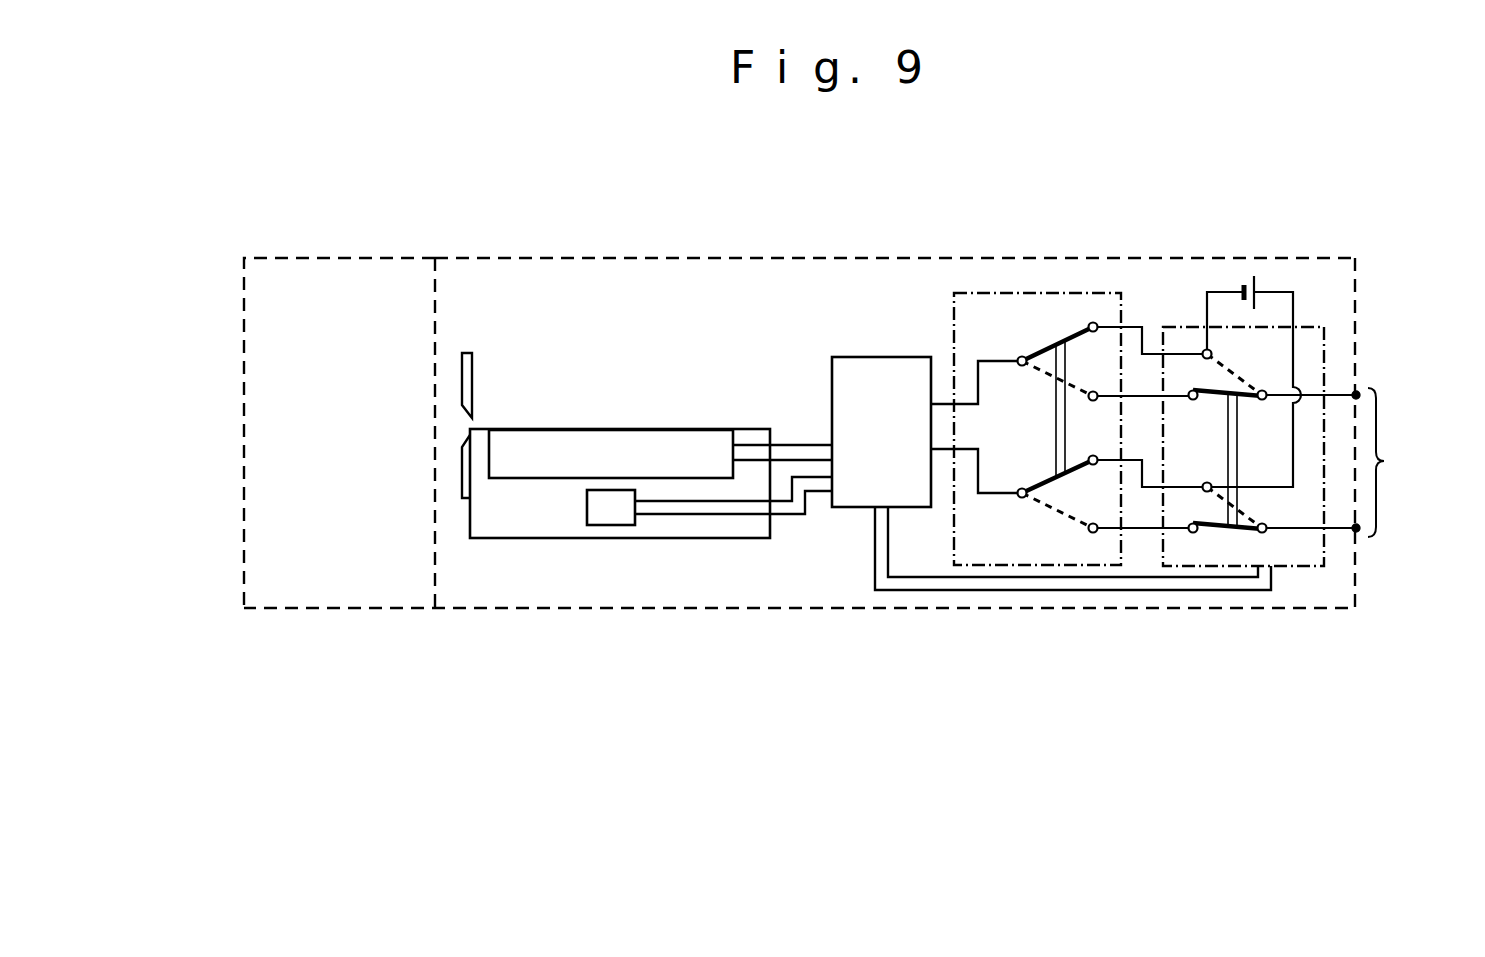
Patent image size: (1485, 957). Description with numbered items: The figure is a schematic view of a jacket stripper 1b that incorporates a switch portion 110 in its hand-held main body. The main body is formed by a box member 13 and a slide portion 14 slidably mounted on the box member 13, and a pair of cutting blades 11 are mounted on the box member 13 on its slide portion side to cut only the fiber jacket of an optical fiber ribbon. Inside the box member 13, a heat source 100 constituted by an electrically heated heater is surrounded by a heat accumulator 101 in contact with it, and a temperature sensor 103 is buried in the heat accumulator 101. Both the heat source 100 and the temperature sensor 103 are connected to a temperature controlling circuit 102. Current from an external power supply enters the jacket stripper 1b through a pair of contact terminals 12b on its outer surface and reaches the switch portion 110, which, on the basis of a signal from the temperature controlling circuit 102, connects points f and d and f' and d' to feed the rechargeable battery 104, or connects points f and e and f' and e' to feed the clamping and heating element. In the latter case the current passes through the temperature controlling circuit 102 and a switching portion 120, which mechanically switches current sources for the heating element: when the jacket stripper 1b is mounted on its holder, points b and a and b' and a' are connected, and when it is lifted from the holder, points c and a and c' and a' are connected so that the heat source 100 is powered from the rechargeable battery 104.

The jacket stripper 1b is at (944, 616).
The cutting blades 11 is at (460, 457).
The box member 13 is at (498, 257).
The slide portion 14 is at (290, 602).
The heat source 100 is at (590, 448).
The heat accumulator 101 is at (508, 527).
The temperature controlling circuit 102 is at (878, 367).
The temperature sensor 103 is at (608, 513).
The rechargeable battery 104 is at (1242, 290).
The switch portion 110 is at (1326, 343).
The switching portion 120 is at (1040, 293).
The contact terminals 12b is at (1400, 462).